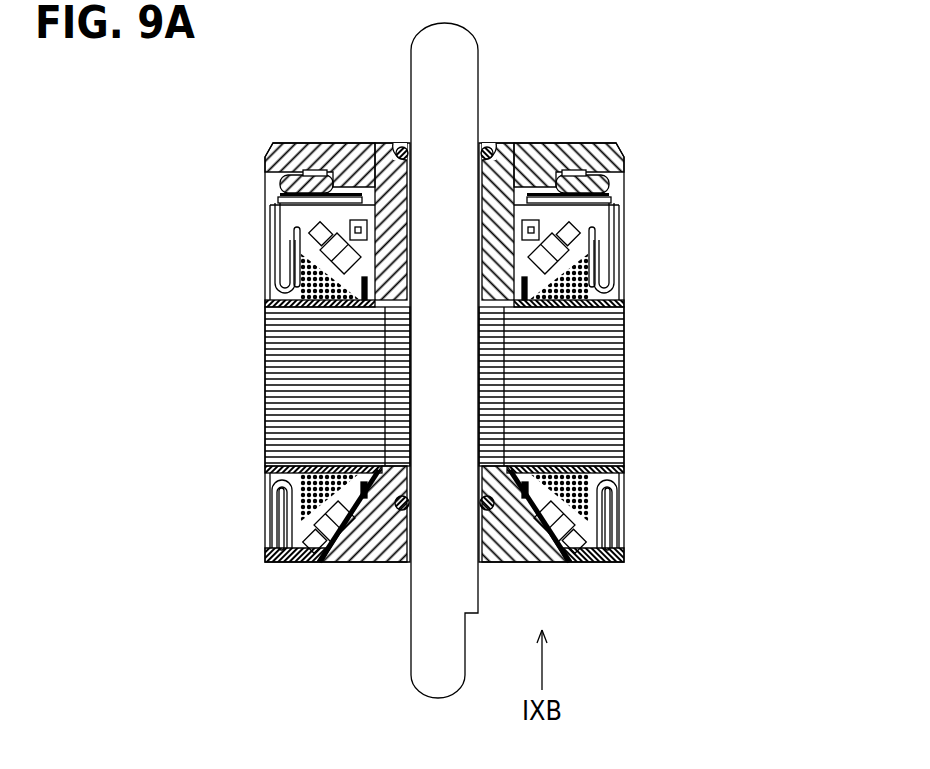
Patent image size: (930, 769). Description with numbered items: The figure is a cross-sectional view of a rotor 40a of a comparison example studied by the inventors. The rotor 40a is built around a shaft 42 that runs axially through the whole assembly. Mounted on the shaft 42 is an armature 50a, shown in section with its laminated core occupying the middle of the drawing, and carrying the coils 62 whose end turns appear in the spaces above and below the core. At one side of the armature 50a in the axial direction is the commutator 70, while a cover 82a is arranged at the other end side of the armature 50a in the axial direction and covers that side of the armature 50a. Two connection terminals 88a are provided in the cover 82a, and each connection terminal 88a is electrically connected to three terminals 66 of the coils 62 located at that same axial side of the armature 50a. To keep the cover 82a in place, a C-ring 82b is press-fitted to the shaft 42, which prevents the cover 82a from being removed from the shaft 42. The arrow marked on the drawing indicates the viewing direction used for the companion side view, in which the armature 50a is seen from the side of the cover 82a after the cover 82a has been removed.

The shaft 42 is at (460, 53).
The commutator 70 is at (562, 142).
The rotor 40a is at (625, 142).
The coils 62 is at (297, 277).
The armature 50a is at (628, 348).
The terminals 66 is at (272, 500).
The connection terminals 88a is at (282, 521).
The cover 82a is at (315, 553).
The C-ring 82b is at (394, 510).